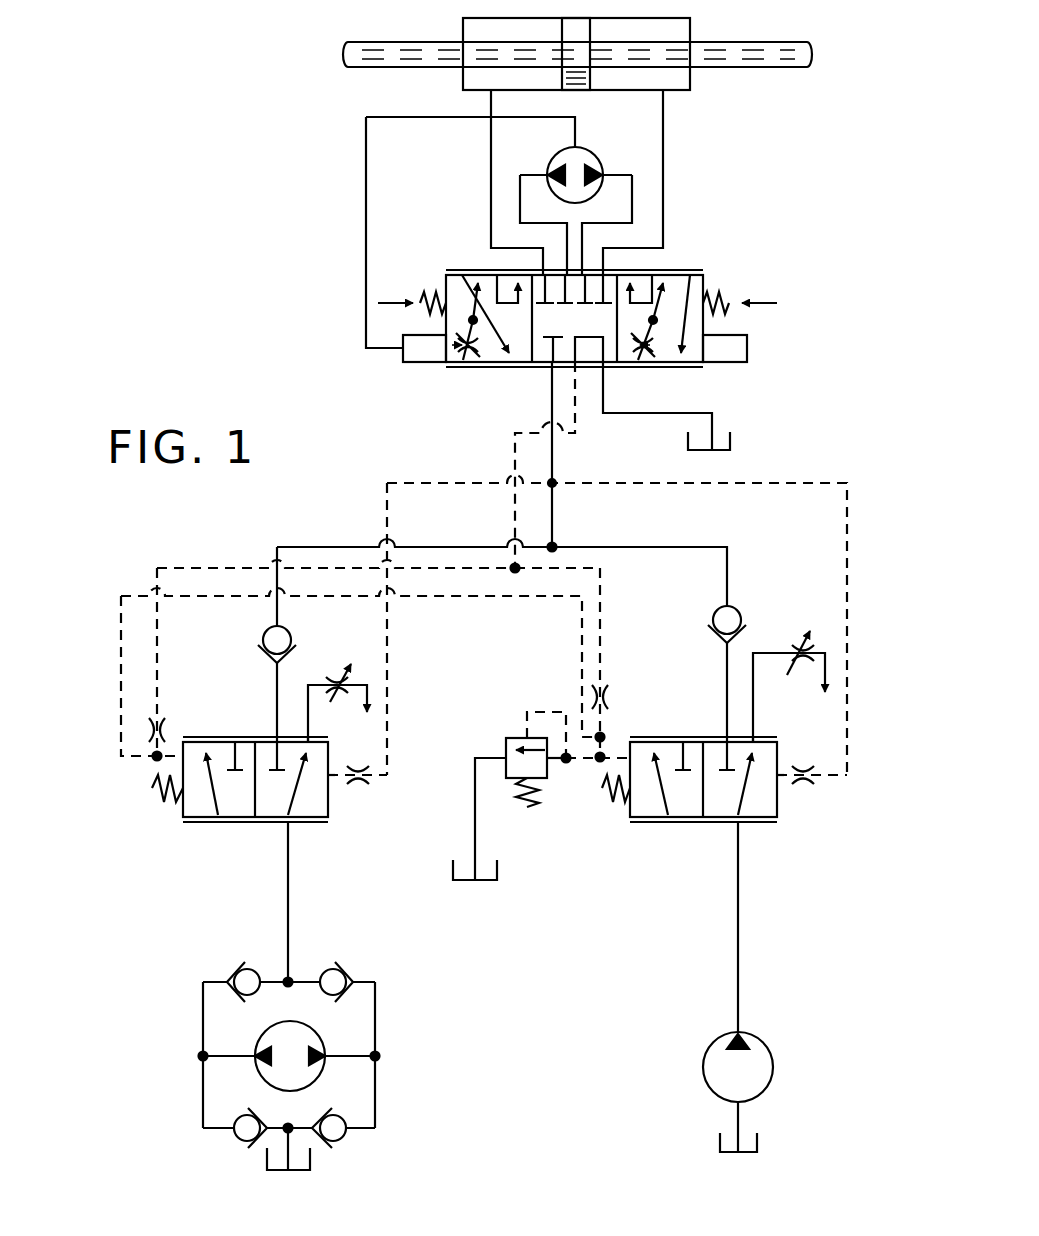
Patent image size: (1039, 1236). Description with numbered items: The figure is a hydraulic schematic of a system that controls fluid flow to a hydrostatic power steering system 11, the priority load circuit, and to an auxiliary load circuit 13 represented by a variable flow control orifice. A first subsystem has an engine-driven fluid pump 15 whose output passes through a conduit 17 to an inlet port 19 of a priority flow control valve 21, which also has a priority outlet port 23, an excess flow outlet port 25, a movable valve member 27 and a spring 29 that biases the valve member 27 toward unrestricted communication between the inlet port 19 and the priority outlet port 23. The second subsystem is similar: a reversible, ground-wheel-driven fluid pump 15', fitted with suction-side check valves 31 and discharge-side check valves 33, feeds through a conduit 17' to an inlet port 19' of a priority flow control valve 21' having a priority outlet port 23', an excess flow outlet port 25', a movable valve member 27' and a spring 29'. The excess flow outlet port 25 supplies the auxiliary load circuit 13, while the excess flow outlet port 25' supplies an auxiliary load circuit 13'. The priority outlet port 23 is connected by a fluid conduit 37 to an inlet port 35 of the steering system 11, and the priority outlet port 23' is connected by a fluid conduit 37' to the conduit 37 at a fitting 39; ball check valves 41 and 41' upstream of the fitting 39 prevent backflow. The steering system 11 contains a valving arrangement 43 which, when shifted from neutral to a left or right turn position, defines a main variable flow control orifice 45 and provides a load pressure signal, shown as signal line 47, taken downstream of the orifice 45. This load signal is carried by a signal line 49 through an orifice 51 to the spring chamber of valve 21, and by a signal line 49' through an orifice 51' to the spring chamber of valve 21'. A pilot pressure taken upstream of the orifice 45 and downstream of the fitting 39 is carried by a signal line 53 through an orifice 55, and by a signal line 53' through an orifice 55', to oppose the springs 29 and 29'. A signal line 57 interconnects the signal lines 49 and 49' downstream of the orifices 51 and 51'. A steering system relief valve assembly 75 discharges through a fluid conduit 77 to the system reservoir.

The hydrostatic power steering system 11 is at (720, 242).
The auxiliary load circuit 13 is at (787, 660).
The auxiliary load circuit 13' is at (337, 679).
The fluid pump 15 is at (756, 1074).
The fluid pump 15' is at (310, 1074).
The conduit 17 is at (774, 927).
The conduit 17' is at (325, 902).
The inlet port 19 is at (703, 808).
The inlet port 19' is at (256, 809).
The priority flow control valve 21 is at (686, 810).
The priority flow control valve 21' is at (225, 807).
The priority outlet port 23 is at (702, 735).
The priority outlet port 23' is at (255, 735).
The excess flow outlet port 25 is at (783, 721).
The excess flow outlet port 25' is at (331, 727).
The movable valve member 27 is at (805, 808).
The movable valve member 27' is at (356, 809).
The spring 29 is at (597, 806).
The spring 29' is at (147, 798).
The suction-side check valves 31 is at (233, 1137).
The discharge-side check valves 33 is at (237, 970).
The inlet port 35 is at (552, 368).
The fluid conduit 37 is at (674, 574).
The fluid conduit 37' is at (414, 558).
The fitting 39 is at (554, 545).
The ball check valve 41 is at (698, 674).
The ball check valve 41' is at (250, 684).
The valving arrangement 43 is at (440, 276).
The variable flow control orifice 45 is at (448, 364).
The load pressure signal line 47 is at (575, 413).
The signal line 49 is at (586, 662).
The signal line 49' is at (338, 635).
The orifice 51 is at (629, 718).
The orifice 51' is at (178, 724).
The signal line 53 is at (617, 608).
The signal line 53' is at (422, 606).
The orifice 55 is at (812, 754).
The orifice 55' is at (374, 790).
The signal line 57 is at (518, 598).
The steering system relief valve assembly 75 is at (490, 735).
The fluid conduit 77 is at (474, 795).